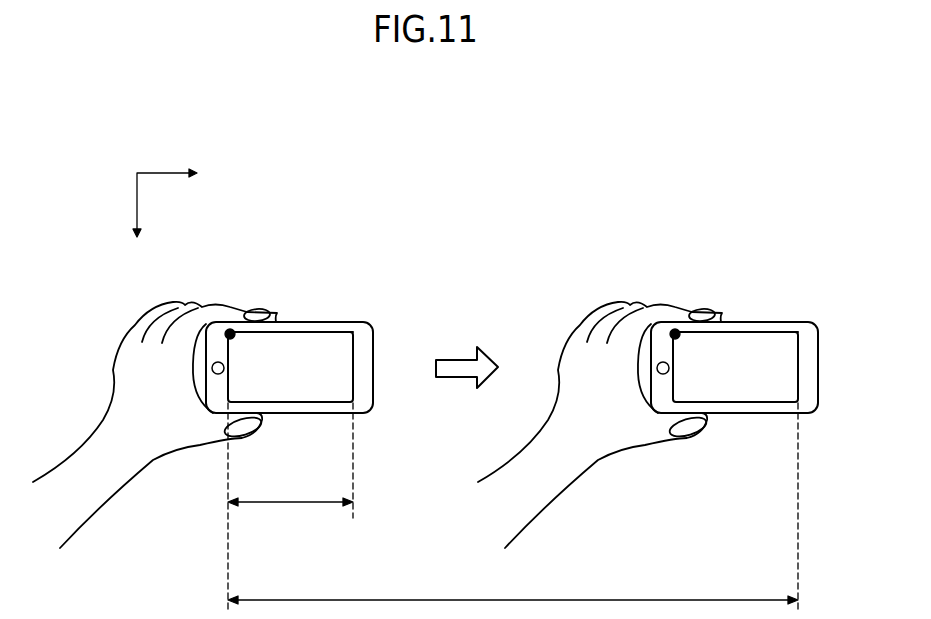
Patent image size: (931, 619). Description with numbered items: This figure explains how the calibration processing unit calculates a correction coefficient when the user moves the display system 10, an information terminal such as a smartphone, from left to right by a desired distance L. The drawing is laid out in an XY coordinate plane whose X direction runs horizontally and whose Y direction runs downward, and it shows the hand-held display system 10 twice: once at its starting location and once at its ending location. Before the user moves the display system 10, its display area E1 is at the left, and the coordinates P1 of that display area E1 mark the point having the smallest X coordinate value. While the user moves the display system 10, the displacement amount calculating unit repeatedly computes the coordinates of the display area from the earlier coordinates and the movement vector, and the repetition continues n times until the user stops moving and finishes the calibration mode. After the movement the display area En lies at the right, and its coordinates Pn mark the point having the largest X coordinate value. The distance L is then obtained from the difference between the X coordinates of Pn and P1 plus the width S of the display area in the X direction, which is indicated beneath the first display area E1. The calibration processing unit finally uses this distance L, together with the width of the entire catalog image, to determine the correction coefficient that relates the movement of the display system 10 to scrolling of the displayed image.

The display system 10 is at (367, 289).
The coordinates of the display area before movement P1 is at (230, 330).
The coordinates of the display area after movement Pn is at (675, 330).
The display area before movement E1 is at (327, 332).
The display area after movement En is at (772, 332).
The width of display area in X direction S is at (290, 490).
The distance L is at (513, 588).
The X direction X is at (176, 199).
The Y direction Y is at (135, 243).